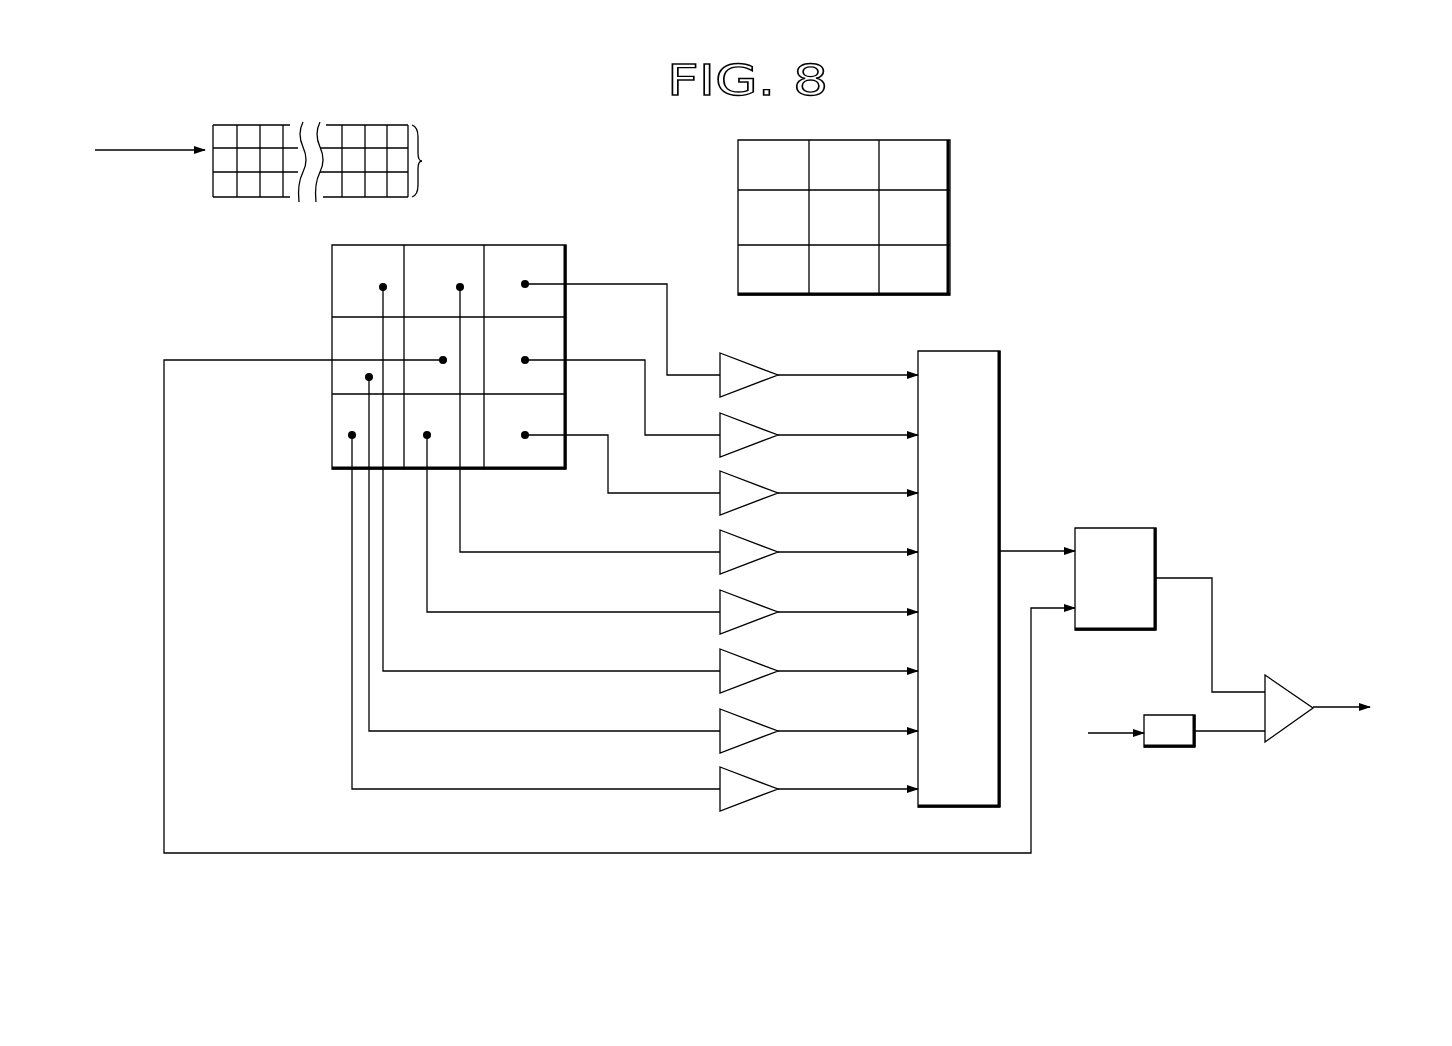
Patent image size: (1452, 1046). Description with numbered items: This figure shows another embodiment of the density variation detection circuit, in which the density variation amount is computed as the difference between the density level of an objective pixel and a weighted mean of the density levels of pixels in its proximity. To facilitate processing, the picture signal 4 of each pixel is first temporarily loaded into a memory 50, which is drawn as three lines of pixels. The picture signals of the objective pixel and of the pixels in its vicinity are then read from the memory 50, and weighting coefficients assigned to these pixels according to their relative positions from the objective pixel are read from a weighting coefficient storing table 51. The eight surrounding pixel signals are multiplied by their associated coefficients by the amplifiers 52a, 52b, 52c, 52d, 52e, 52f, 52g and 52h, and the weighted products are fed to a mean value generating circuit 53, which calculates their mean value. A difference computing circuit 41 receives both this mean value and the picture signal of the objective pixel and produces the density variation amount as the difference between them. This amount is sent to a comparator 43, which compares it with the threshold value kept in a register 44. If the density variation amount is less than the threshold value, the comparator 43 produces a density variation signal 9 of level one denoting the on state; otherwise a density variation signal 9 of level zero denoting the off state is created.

The picture signal 4 is at (131, 119).
The memory 50 is at (395, 135).
The weighting coefficient storing table 51 is at (1014, 212).
The amplifier 52a is at (743, 356).
The amplifier 52b is at (718, 421).
The amplifier 52c is at (718, 483).
The amplifier 52d is at (718, 541).
The amplifier 52e is at (718, 602).
The amplifier 52f is at (717, 663).
The amplifier 52g is at (717, 720).
The amplifier 52h is at (717, 780).
The mean value generating circuit 53 is at (954, 351).
The difference computing circuit 41 is at (1078, 528).
The comparator 43 is at (1293, 725).
The register 44 is at (1167, 747).
The density variation signal 9 is at (1340, 652).